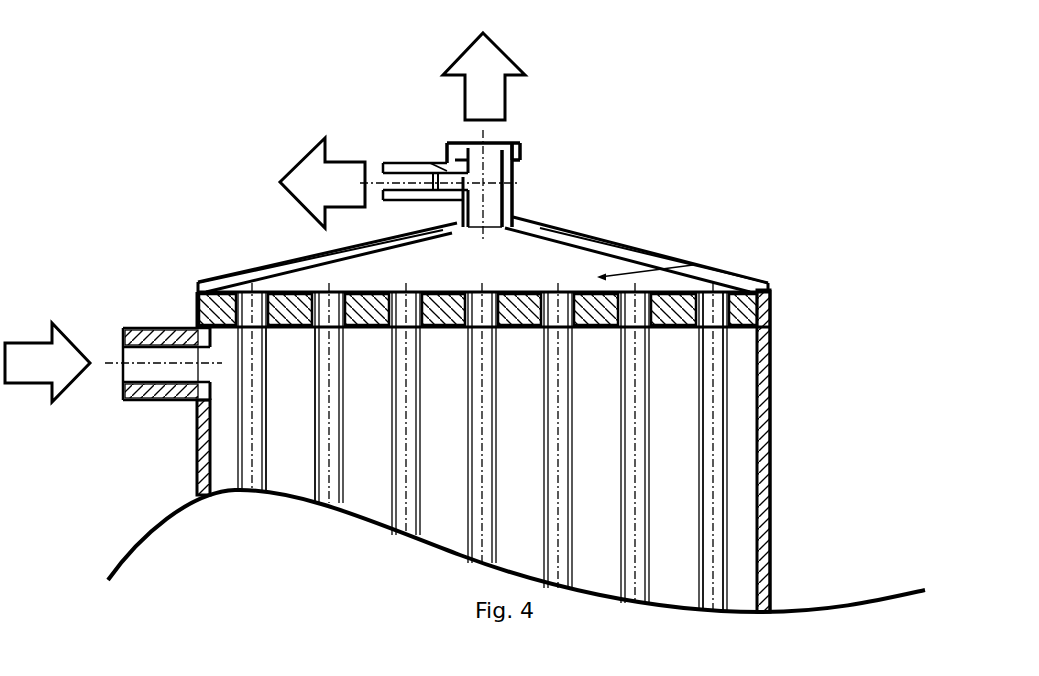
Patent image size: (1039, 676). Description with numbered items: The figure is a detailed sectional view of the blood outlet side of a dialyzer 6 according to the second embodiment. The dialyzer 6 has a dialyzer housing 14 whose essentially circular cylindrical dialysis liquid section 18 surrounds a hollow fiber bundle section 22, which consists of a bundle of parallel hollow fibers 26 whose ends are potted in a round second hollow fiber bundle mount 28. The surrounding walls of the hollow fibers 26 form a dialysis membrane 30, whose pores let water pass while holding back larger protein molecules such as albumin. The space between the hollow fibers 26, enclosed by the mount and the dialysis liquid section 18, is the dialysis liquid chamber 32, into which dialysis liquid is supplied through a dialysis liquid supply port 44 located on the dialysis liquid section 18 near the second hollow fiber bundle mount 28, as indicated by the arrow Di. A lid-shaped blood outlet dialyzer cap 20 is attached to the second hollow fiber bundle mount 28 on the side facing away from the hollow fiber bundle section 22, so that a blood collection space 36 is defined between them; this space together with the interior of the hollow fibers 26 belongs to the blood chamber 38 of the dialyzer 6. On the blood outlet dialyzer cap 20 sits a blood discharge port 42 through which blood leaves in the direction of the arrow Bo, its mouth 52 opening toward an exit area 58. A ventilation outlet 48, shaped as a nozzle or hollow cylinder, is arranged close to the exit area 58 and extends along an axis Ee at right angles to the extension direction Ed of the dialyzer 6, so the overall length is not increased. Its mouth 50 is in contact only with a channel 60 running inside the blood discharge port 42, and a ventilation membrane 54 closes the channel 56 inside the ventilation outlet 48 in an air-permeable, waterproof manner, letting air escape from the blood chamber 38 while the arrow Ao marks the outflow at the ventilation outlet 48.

The dialyzer 6 is at (172, 155).
The dialyzer housing 14 is at (767, 567).
The dialysis liquid section 18 is at (768, 497).
The blood outlet dialyzer cap 20 is at (647, 253).
The hollow fiber bundle section 22 is at (730, 530).
The hollow fibers 26 is at (730, 460).
The dialysis membrane 30 is at (730, 460).
The second hollow fiber bundle mount 28 is at (200, 285).
The dialysis liquid chamber 32 is at (287, 448).
The blood collection space 36 is at (680, 263).
The blood chamber 38 is at (333, 395).
The blood discharge port 42 is at (510, 183).
The dialysis liquid supply port 44 is at (150, 393).
The ventilation outlet 48 is at (392, 167).
The mouth of the ventilation outlet 50 is at (510, 177).
The mouth of the blood discharge port 52 is at (240, 294).
The ventilation membrane 54 is at (430, 167).
The channel 56 is at (420, 173).
The exit area 58 is at (517, 143).
The channel 60 is at (493, 203).
The coolant outlet direction Ao is at (322, 183).
The blood discharge arrow Bo is at (484, 76).
The dialysis liquid supply arrow Di is at (47, 362).
The axis of the ventilation outlet Ee is at (410, 175).
The extension direction of the dialyzer Ed is at (483, 195).